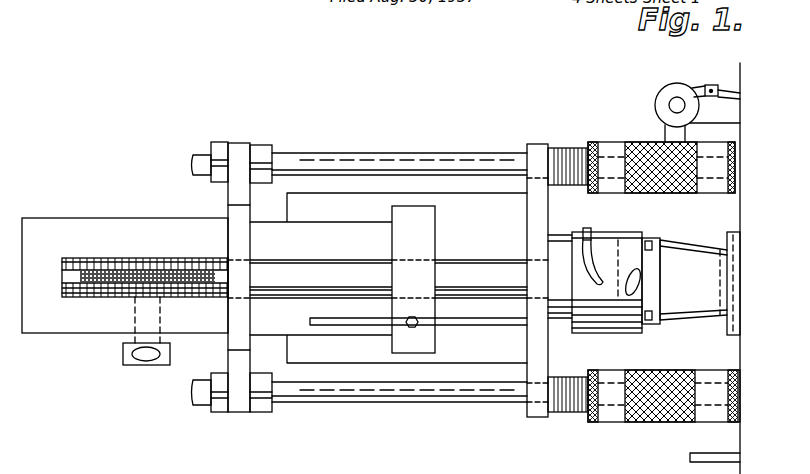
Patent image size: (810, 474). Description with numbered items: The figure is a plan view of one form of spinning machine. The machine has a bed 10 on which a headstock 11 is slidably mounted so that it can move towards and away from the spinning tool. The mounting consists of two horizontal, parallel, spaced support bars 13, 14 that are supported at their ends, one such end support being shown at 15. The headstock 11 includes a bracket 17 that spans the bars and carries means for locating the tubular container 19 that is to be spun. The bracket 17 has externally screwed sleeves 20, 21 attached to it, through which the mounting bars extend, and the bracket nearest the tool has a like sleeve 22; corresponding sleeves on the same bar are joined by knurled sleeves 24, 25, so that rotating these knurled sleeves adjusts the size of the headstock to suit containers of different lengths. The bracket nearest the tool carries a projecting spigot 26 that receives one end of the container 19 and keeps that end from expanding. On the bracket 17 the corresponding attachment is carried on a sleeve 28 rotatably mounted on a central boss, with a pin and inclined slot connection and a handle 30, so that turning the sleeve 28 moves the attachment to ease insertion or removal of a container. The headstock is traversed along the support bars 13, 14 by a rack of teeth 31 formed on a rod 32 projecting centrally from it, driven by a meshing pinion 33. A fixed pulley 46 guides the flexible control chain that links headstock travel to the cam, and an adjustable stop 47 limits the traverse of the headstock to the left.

The bed 10 is at (78, 322).
The headstock 11 is at (561, 313).
The support bar 13 is at (333, 398).
The support bar 14 is at (325, 163).
The bar end support 15 is at (240, 200).
The bracket 17 is at (537, 210).
The tubular container 19 is at (678, 313).
The externally screwed sleeve 20 is at (570, 412).
The externally screwed sleeve 21 is at (574, 150).
The externally screwed sleeve 22 is at (737, 413).
The knurled sleeve 24 is at (640, 422).
The knurled sleeve 25 is at (635, 142).
The projecting spigot 26 is at (737, 335).
The sleeve 28 is at (619, 333).
The handle 30 is at (642, 250).
The rack of teeth 31 is at (190, 258).
The rod 32 is at (277, 268).
The pinion 33 is at (122, 280).
The fixed pulley 46 is at (678, 104).
The adjustable stop 47 is at (492, 322).